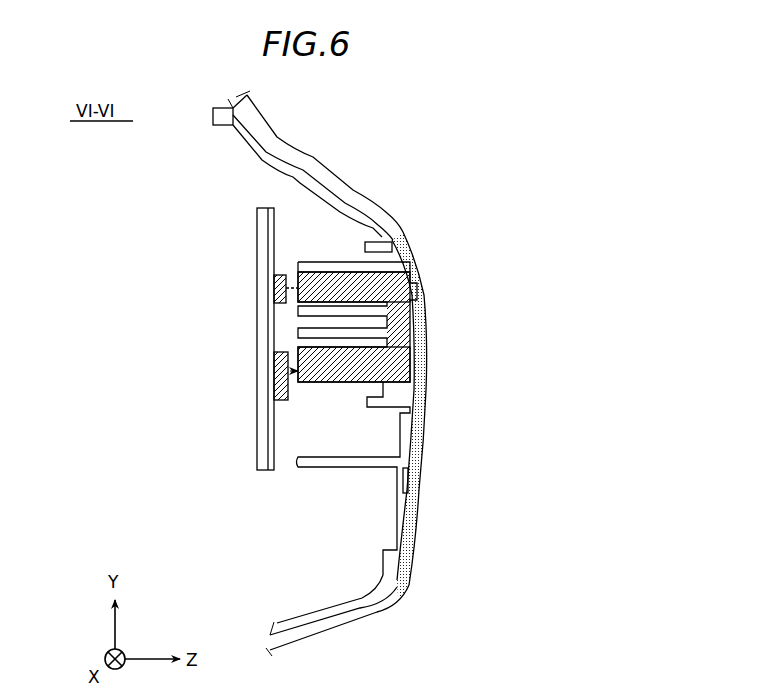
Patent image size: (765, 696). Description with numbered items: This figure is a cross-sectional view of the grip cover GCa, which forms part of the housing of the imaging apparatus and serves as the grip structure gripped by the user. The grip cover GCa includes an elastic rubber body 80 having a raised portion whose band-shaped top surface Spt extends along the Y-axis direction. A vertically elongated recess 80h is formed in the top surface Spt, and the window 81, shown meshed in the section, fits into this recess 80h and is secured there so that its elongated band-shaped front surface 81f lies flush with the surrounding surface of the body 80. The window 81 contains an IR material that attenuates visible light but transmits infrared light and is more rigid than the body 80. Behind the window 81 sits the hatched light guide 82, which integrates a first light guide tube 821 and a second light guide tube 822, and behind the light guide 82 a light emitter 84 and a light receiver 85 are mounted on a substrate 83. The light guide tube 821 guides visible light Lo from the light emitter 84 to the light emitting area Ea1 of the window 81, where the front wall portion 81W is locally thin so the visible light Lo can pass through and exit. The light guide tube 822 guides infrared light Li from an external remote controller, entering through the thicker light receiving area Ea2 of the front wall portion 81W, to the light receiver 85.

The body 80 is at (344, 178).
The recess 80h is at (425, 586).
The window 81 is at (417, 522).
The front wall portion 81W is at (421, 452).
The front surface 81f is at (436, 490).
The light guide 82 is at (355, 385).
The light guide tube (first light guide) 821 is at (315, 283).
The light guide tube (second light guide) 822 is at (312, 382).
The substrate 83 is at (257, 240).
The light emitter 84 is at (280, 303).
The light receiver 85 is at (276, 400).
The grip cover GCa is at (414, 188).
The light emitting area Ea1 is at (425, 283).
The light receiving area Ea2 is at (433, 371).
The visible light Lo is at (428, 287).
The infrared light Li is at (435, 363).
The top surface Spt is at (479, 326).